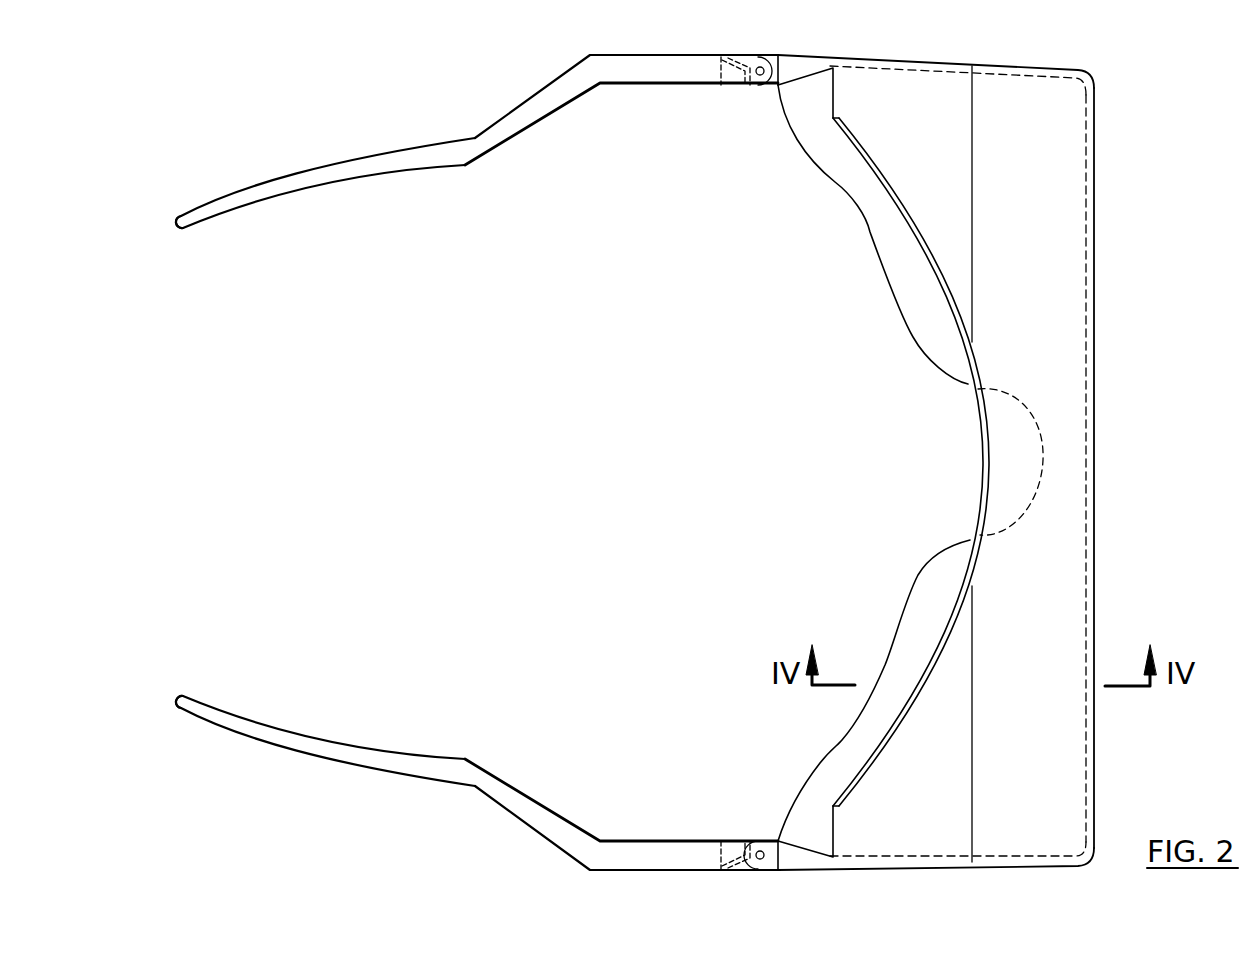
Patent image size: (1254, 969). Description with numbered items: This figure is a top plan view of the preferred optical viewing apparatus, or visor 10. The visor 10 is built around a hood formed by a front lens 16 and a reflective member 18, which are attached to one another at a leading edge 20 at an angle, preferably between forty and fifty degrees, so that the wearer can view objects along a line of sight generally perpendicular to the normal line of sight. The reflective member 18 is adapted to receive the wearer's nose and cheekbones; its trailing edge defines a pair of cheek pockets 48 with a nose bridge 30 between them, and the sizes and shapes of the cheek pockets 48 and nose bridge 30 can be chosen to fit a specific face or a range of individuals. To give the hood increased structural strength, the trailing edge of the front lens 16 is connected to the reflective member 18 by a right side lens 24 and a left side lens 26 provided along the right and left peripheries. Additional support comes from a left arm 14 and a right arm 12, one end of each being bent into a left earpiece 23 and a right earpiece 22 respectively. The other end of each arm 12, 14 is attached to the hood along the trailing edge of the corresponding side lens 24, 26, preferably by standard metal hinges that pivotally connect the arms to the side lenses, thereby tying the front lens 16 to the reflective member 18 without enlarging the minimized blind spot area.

The visor 10 is at (842, 345).
The right arm 12 is at (547, 832).
The left arm 14 is at (564, 90).
The front lens 16 is at (917, 589).
The reflective member 18 is at (930, 618).
The leading edge 20 is at (972, 469).
The right earpiece 22 is at (243, 718).
The left earpiece 23 is at (228, 205).
The right side lens 24 is at (986, 868).
The left side lens 26 is at (947, 64).
The nose bridge 30 is at (1013, 400).
The cheek pockets 48 is at (868, 233).